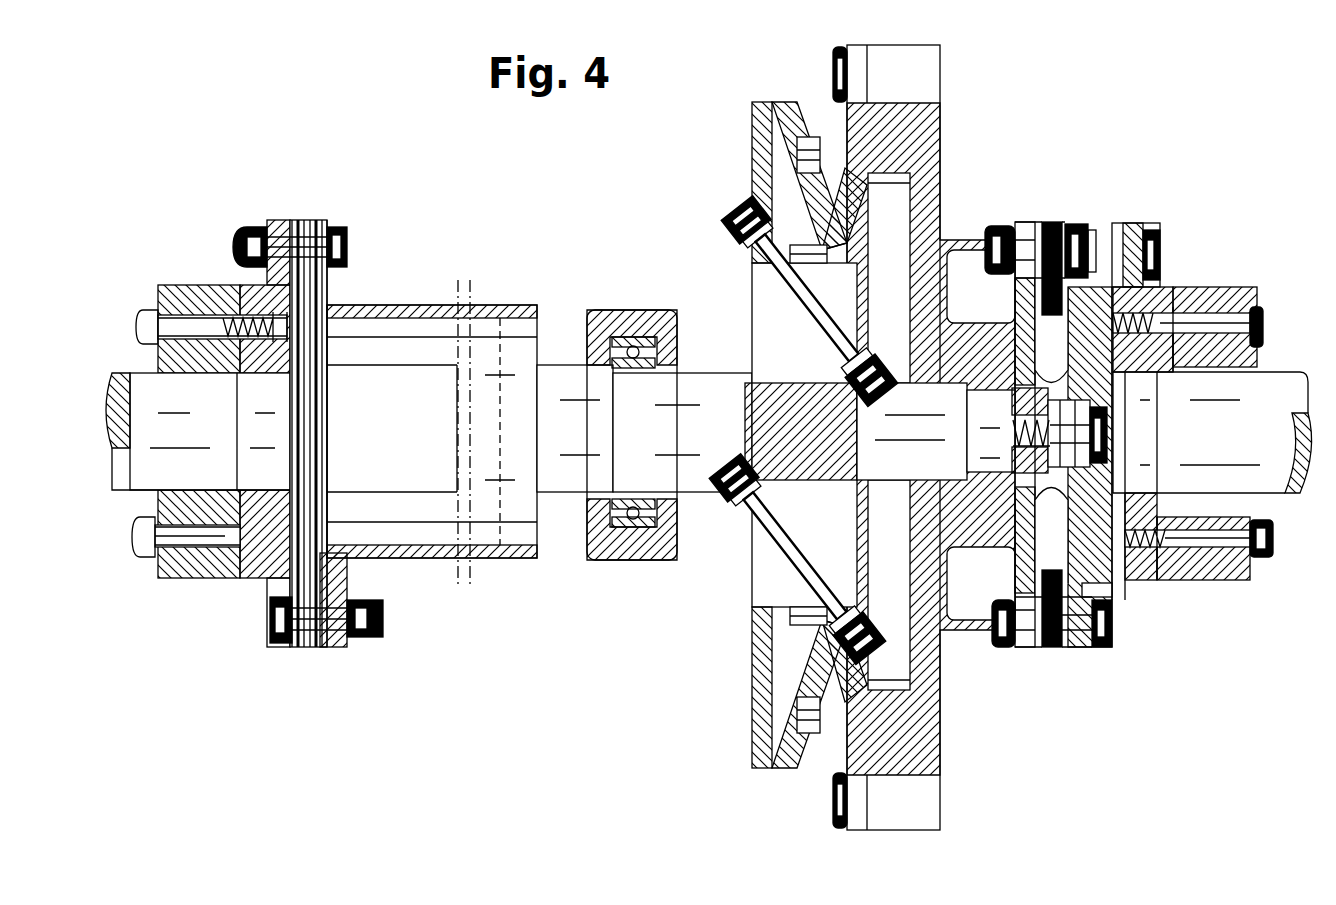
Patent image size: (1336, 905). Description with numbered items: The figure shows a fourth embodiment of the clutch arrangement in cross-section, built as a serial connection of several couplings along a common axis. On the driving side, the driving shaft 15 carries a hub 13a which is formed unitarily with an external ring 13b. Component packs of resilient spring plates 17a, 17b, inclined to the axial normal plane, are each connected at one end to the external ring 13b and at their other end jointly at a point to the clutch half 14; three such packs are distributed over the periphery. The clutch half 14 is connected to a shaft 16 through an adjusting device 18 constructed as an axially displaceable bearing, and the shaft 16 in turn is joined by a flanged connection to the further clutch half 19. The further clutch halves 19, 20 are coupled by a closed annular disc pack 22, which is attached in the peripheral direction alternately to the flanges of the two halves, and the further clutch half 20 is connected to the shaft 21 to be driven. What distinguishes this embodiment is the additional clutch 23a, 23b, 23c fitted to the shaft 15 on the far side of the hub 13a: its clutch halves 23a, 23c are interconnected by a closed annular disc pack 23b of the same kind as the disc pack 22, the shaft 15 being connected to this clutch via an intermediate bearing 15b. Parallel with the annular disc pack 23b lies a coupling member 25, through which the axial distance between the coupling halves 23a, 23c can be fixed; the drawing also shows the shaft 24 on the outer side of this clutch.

The hub 13a is at (913, 733).
The external ring 13b is at (750, 713).
The clutch half 14 is at (768, 514).
The driving shaft 15 is at (920, 403).
The intermediate bearing 15b is at (998, 550).
The shaft 16 is at (565, 382).
The component pack of spring plates 17a is at (940, 148).
The component pack of spring plates 17b is at (765, 605).
The adjusting device 18 is at (647, 310).
The further clutch half 19 is at (395, 307).
The further clutch half 20 is at (245, 238).
The shaft to be driven 21 is at (158, 407).
The annular disc pack 22 is at (337, 222).
The clutch half 23a is at (1025, 235).
The annular disc pack 23b is at (1085, 235).
The clutch half 23c is at (1163, 225).
The output shaft 24 is at (1252, 397).
The coupling member 25 is at (1147, 580).